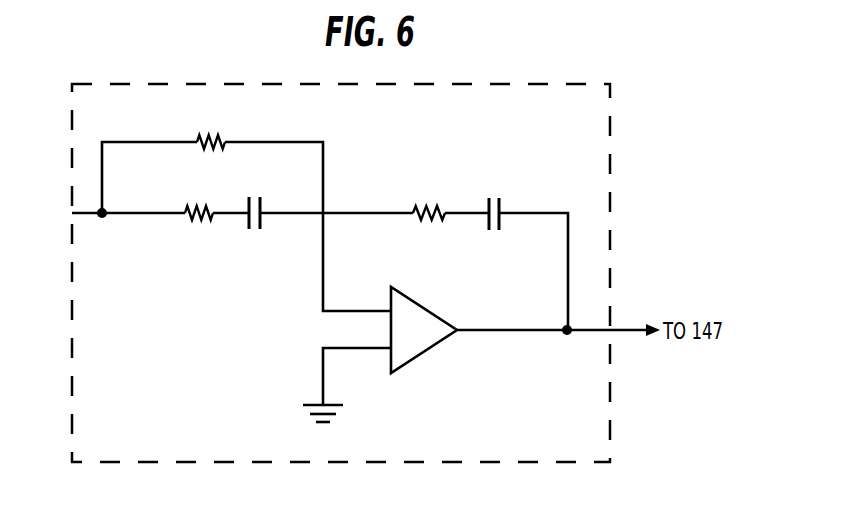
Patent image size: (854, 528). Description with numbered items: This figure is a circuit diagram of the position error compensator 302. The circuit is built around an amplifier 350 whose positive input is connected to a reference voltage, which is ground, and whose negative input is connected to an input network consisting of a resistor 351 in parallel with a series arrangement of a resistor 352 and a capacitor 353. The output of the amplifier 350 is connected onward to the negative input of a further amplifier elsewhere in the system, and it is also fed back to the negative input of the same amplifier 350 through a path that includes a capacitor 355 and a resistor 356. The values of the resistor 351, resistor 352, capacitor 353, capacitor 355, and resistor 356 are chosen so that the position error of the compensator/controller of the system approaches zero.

The position error compensator 302 is at (428, 462).
The amplifier 350 is at (430, 349).
The resistor 351 is at (203, 133).
The resistor 352 is at (186, 220).
The capacitor 353 is at (254, 230).
The capacitor 355 is at (492, 232).
The resistor 356 is at (420, 208).